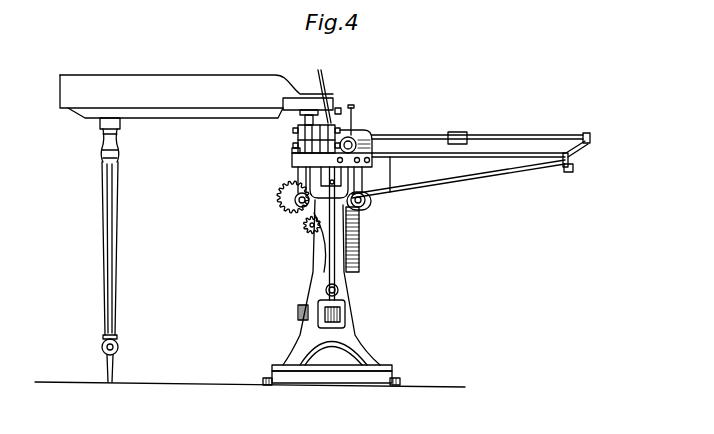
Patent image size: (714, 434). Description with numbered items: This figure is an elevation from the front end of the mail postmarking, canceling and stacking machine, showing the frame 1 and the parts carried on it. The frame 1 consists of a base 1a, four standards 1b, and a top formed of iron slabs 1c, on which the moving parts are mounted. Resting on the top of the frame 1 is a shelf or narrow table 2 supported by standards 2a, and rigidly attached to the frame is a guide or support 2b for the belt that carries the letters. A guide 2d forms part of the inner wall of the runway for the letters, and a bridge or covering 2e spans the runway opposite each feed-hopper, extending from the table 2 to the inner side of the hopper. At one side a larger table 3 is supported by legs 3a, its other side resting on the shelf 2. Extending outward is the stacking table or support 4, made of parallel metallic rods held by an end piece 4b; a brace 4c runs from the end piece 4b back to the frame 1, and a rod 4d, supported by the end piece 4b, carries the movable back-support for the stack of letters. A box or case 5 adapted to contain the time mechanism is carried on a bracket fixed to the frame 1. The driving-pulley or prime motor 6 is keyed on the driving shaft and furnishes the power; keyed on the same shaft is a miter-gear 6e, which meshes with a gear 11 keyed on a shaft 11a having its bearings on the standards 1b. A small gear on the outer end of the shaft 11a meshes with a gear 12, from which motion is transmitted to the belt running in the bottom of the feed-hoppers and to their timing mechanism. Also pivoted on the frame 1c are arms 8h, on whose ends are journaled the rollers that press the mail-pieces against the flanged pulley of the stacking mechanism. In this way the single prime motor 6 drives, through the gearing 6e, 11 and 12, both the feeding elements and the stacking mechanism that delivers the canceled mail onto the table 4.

The frame 1 is at (345, 284).
The base 1a is at (392, 368).
The standards 1b is at (345, 305).
The iron slabs 1c is at (292, 158).
The shelf 2 is at (297, 107).
The standards 2a is at (303, 116).
The guide 2b is at (341, 122).
The guide 2d is at (333, 84).
The bridge 2e is at (338, 112).
The table 3 is at (165, 88).
The legs 3a is at (112, 197).
The table 4 is at (517, 158).
The end piece 4b is at (587, 146).
The brace 4c is at (467, 178).
The rod 4d is at (512, 136).
The box 5 is at (359, 253).
The driving-pulley 6 is at (298, 313).
The miter-gear 6e is at (319, 244).
The arms 8h is at (453, 132).
The gear 11 is at (303, 224).
The shaft 11a is at (318, 228).
The gear 12 is at (281, 196).